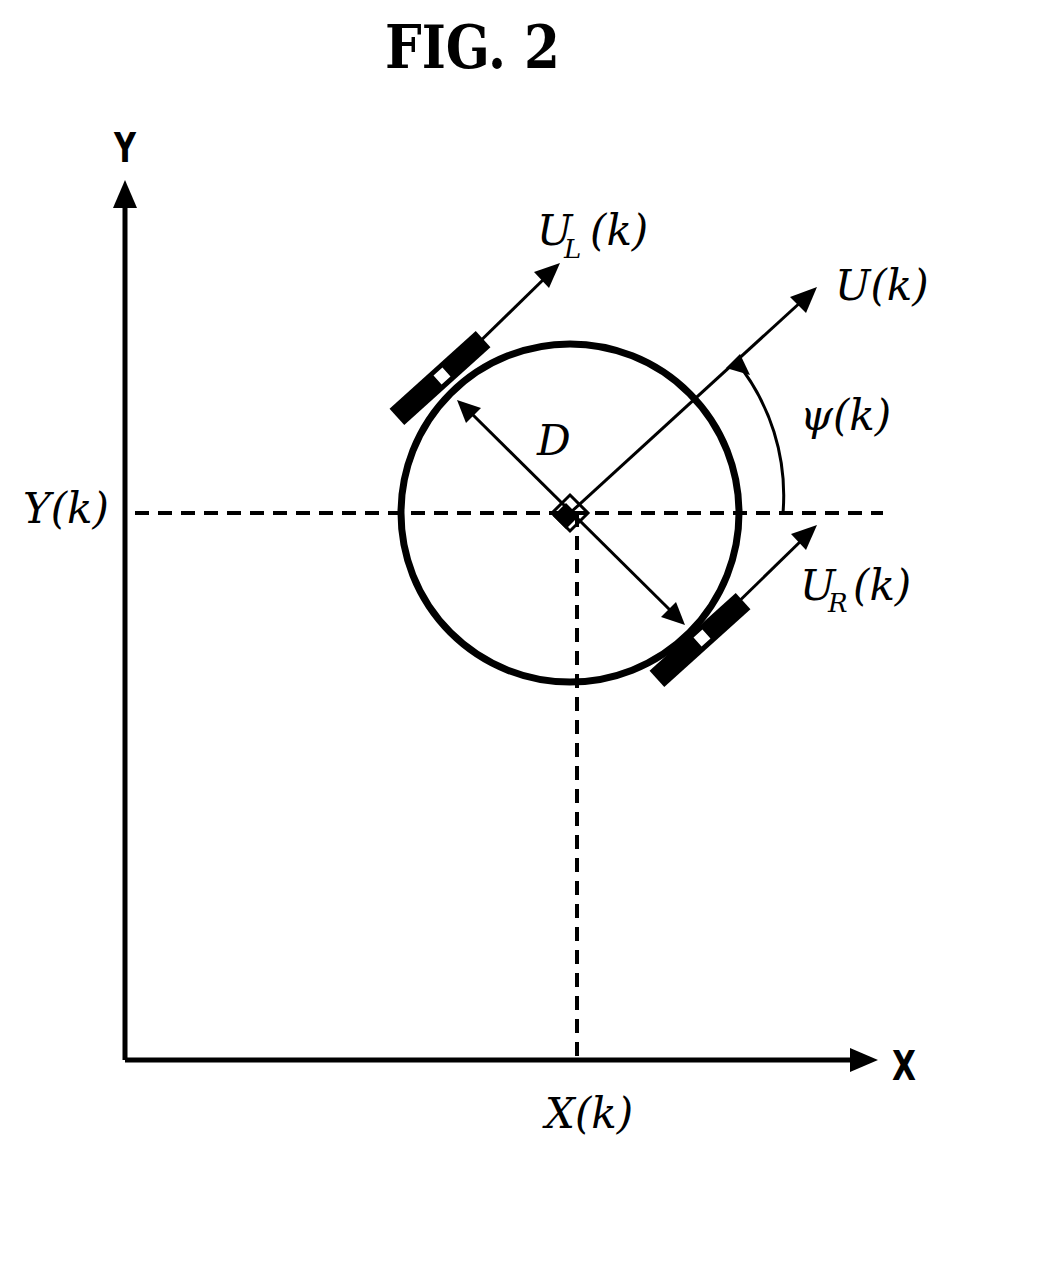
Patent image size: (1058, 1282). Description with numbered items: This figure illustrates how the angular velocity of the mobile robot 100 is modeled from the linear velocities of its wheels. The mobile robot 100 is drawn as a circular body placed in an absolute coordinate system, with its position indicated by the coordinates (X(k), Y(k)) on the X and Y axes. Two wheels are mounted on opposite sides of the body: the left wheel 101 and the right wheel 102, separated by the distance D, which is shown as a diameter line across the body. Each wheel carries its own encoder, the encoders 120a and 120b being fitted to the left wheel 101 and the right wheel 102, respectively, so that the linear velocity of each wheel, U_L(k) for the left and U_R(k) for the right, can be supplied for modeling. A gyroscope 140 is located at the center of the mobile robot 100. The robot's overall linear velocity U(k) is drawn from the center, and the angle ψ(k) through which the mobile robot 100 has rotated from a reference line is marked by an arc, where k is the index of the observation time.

The mobile robot 100 is at (628, 352).
The left wheel 101 is at (405, 403).
The right wheel 102 is at (673, 686).
The encoder 120a is at (437, 368).
The encoder 120b is at (705, 649).
The gyroscope 140 is at (565, 533).